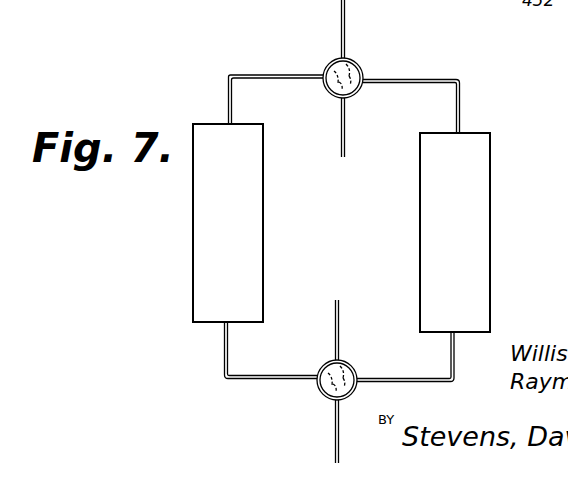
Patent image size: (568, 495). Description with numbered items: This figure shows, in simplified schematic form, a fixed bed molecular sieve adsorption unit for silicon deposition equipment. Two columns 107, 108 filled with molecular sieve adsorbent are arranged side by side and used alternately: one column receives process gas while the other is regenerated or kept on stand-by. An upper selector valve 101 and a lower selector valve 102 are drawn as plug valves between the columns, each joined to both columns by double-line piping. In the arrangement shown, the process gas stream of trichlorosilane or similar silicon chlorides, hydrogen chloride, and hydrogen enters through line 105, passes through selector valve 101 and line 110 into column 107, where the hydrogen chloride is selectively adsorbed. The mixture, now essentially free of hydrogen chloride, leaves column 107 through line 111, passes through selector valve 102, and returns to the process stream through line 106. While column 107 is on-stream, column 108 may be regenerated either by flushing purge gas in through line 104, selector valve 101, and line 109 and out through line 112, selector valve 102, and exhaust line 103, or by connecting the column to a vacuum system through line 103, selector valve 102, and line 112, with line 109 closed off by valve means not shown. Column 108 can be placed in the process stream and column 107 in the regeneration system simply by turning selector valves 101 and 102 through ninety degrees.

The selector valve 101 is at (356, 93).
The selector valve 102 is at (352, 367).
The exhaust line 103 is at (336, 430).
The line 104 is at (347, 33).
The line 105 is at (340, 135).
The line 106 is at (336, 330).
The column 107 is at (196, 224).
The column 108 is at (481, 226).
The line 109 is at (460, 104).
The line 110 is at (227, 93).
The line 111 is at (225, 347).
The line 112 is at (455, 362).